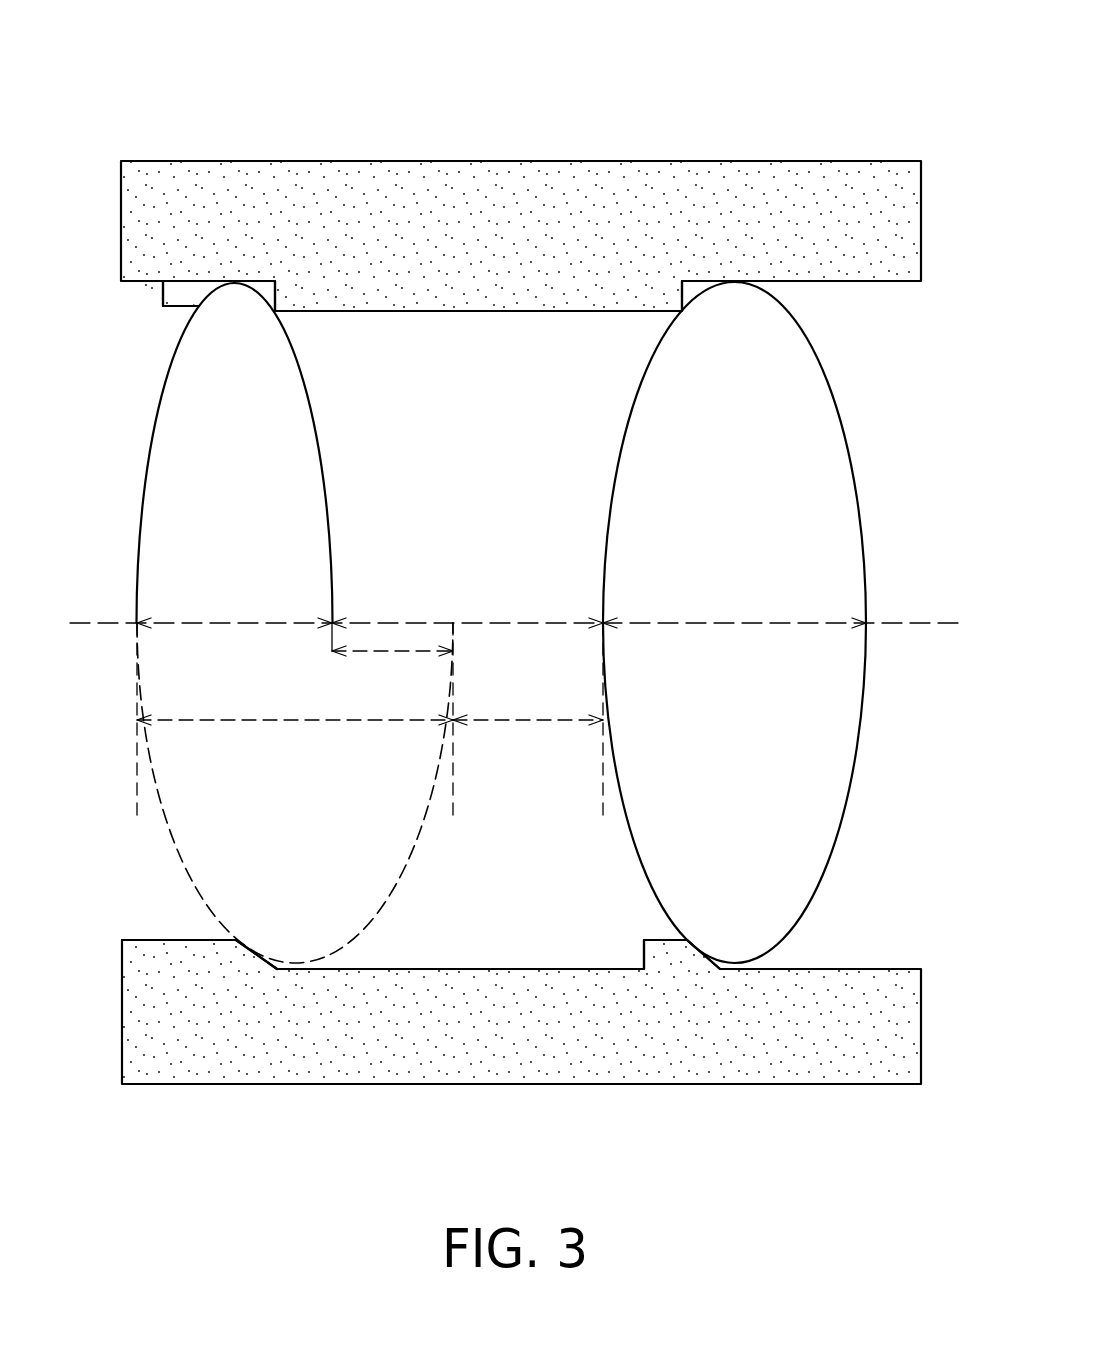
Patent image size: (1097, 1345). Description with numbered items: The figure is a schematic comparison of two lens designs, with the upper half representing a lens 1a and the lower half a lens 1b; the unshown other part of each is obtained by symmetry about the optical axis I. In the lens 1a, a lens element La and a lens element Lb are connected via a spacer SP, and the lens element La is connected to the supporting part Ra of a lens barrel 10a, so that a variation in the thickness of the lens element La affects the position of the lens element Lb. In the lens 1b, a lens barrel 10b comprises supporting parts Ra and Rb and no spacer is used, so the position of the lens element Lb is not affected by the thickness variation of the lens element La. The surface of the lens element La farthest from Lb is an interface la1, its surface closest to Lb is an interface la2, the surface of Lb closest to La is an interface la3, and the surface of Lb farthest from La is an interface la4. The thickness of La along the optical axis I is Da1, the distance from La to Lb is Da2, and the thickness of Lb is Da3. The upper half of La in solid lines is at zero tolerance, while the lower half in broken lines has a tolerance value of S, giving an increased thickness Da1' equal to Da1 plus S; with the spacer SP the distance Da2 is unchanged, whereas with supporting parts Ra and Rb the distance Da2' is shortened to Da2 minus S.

The lens 1a is at (502, 164).
The lens barrel 10a is at (185, 195).
The spacer SP is at (403, 297).
The supporting part Ra is at (178, 300).
The lens element La is at (252, 623).
The interface la1 is at (145, 470).
The interface la2 is at (303, 373).
The interface la3 is at (645, 368).
The interface la4 is at (833, 395).
The lens element Lb is at (749, 622).
The optical axis I is at (912, 622).
The thickness of the lens element La Da1 is at (234, 605).
The distance of the lens element La to the lens element Lb Da2 is at (467, 605).
The thickness of the lens element Lb Da3 is at (734, 605).
The tolerance value S is at (392, 658).
The thickness of the lens element La increased by tolerance Da1' is at (295, 720).
The shortened distance Da2' is at (529, 720).
The lens 1b is at (502, 1009).
The lens barrel 10b is at (143, 1002).
The supporting part Rb is at (688, 957).